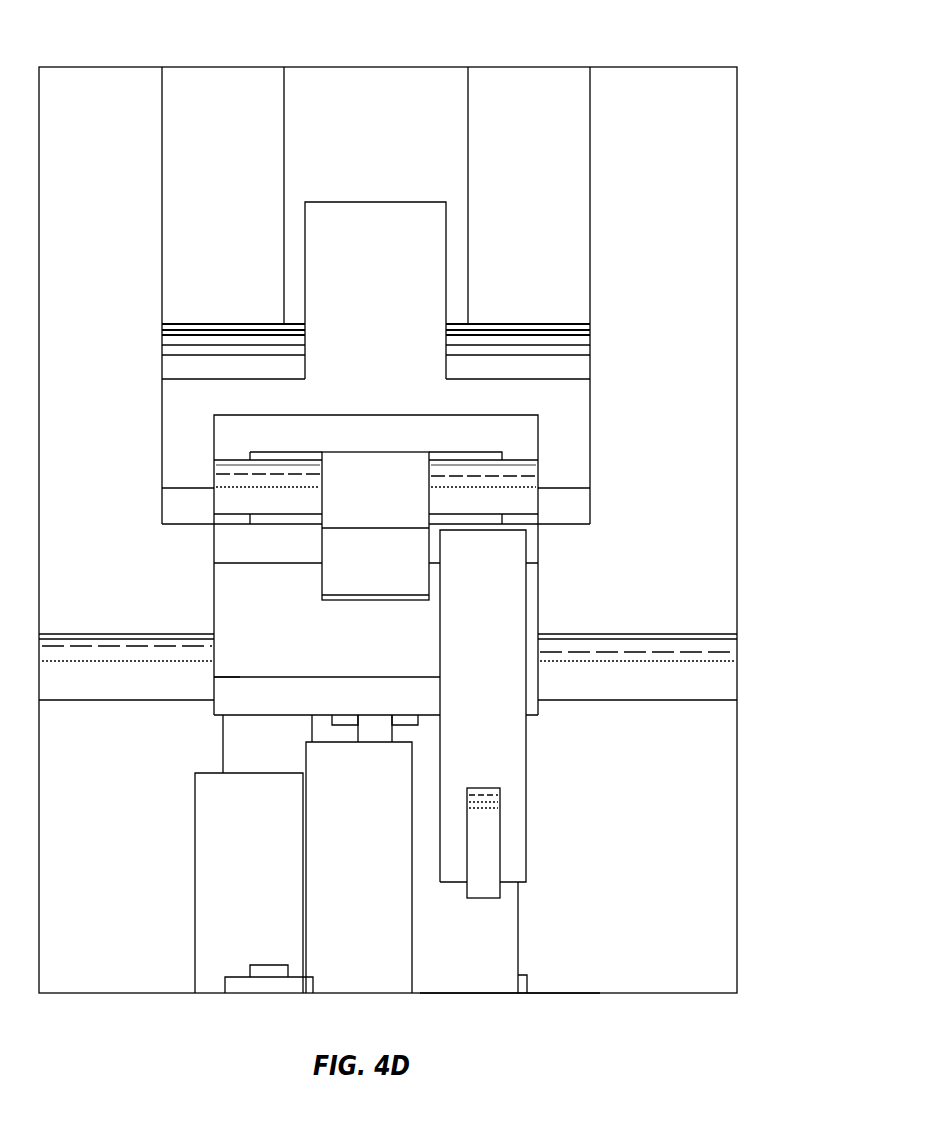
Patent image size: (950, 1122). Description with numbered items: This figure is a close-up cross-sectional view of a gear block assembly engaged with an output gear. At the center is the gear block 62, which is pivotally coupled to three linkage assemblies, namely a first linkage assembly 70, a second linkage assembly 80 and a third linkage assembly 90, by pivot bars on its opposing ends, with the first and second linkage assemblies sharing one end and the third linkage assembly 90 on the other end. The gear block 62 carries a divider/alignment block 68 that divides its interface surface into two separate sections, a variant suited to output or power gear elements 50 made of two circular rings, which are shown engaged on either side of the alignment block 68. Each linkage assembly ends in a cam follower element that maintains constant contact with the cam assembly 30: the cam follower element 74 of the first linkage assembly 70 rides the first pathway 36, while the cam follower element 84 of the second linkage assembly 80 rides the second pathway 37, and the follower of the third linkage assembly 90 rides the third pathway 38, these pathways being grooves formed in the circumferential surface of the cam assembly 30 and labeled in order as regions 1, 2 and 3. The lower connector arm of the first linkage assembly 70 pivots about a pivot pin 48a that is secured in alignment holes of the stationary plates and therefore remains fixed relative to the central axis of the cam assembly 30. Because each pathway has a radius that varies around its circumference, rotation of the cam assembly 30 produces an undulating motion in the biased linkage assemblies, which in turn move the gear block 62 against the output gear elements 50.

The cam assembly 30 is at (459, 993).
The first pathway 36 is at (500, 937).
The second pathway 37 is at (344, 875).
The third pathway 38 is at (236, 875).
The pivot pin 48a is at (712, 668).
The output or power gear elements 50 is at (214, 200).
The gear block 62 is at (590, 433).
The divider/alignment block 68 is at (375, 215).
The first linkage assembly 70 is at (498, 752).
The cam follower element 74 is at (500, 837).
The second linkage assembly 80 is at (283, 650).
The cam follower element 84 is at (375, 744).
The third linkage assembly 90 is at (238, 677).
The first region 1 is at (479, 924).
The second region 2 is at (359, 926).
The third region 3 is at (249, 926).